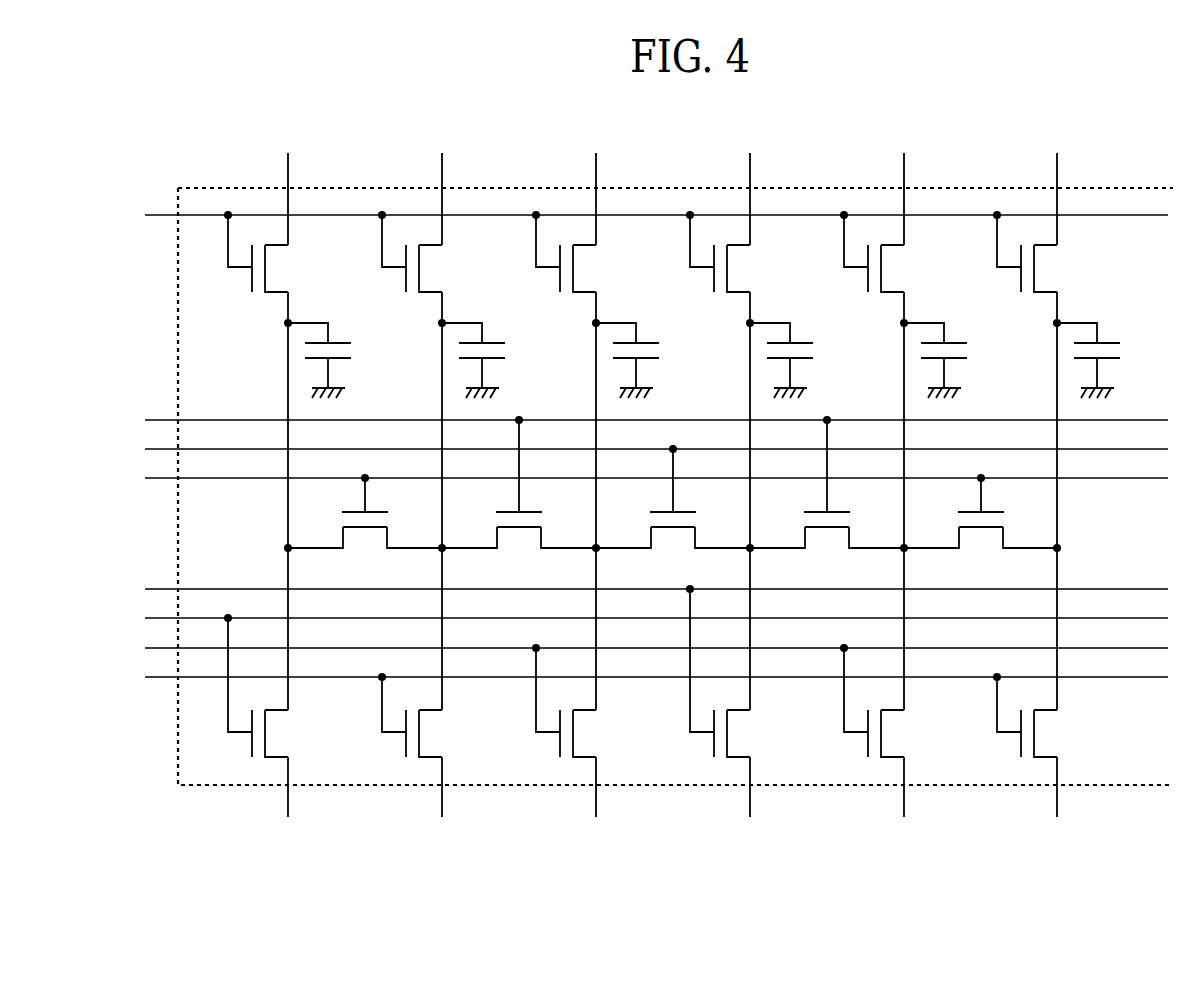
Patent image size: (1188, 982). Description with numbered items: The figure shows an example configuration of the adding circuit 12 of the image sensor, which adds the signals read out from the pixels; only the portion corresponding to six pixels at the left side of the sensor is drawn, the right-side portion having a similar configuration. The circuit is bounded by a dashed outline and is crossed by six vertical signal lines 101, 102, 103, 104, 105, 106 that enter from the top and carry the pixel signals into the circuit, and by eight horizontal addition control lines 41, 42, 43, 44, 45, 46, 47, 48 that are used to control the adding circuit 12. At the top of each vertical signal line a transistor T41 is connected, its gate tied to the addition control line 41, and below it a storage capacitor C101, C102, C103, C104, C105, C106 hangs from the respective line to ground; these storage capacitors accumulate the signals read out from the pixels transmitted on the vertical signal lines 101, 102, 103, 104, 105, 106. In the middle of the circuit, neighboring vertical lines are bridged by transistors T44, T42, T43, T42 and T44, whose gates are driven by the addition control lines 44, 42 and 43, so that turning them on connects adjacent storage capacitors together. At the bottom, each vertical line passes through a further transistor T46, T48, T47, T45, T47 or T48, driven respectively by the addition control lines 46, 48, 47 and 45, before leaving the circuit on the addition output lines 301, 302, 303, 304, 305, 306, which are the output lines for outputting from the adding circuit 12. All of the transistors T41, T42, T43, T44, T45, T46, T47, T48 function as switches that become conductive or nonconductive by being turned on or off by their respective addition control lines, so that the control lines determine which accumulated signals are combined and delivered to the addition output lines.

The adding circuit 12 is at (178, 732).
The addition control line 41 is at (642, 216).
The addition control line 42 is at (642, 421).
The addition control line 43 is at (642, 450).
The addition control line 44 is at (642, 479).
The addition control line 45 is at (642, 590).
The addition control line 46 is at (642, 619).
The addition control line 47 is at (642, 649).
The addition control line 48 is at (642, 678).
The vertical signal line 101 is at (288, 417).
The vertical signal line 102 is at (442, 417).
The vertical signal line 103 is at (596, 417).
The vertical signal line 104 is at (750, 417).
The vertical signal line 105 is at (904, 417).
The vertical signal line 106 is at (1057, 417).
The addition output line 301 is at (288, 805).
The addition output line 302 is at (442, 805).
The addition output line 303 is at (596, 805).
The addition output line 304 is at (750, 805).
The addition output line 305 is at (904, 805).
The addition output line 306 is at (1057, 805).
The transistor T41 is at (632, 256).
The transistor T42 is at (673, 496).
The transistor T43 is at (673, 511).
The transistor T44 is at (672, 525).
The transistor T45 is at (704, 675).
The transistor T46 is at (242, 689).
The transistor T47 is at (704, 704).
The transistor T48 is at (703, 719).
The storage capacitor C101 is at (351, 358).
The storage capacitor C102 is at (505, 358).
The storage capacitor C103 is at (659, 358).
The storage capacitor C104 is at (813, 358).
The storage capacitor C105 is at (967, 358).
The storage capacitor C106 is at (1120, 358).